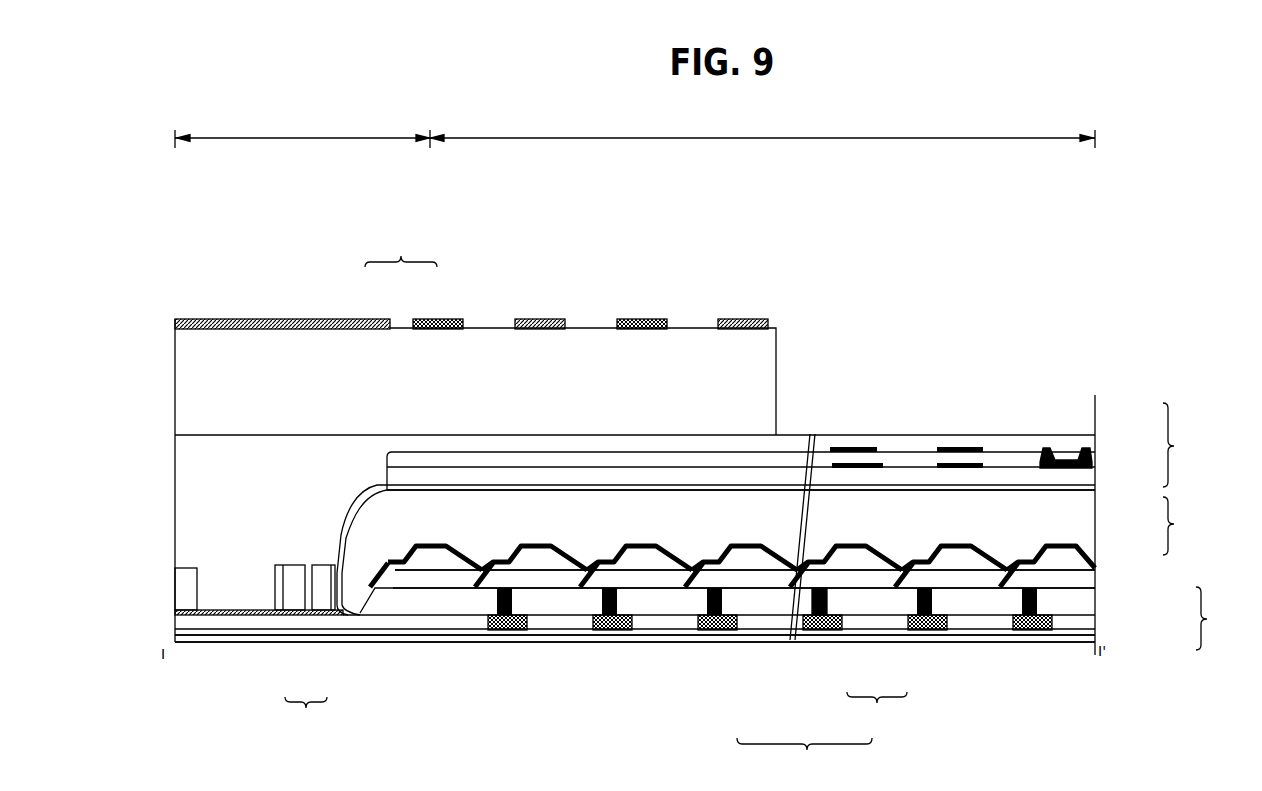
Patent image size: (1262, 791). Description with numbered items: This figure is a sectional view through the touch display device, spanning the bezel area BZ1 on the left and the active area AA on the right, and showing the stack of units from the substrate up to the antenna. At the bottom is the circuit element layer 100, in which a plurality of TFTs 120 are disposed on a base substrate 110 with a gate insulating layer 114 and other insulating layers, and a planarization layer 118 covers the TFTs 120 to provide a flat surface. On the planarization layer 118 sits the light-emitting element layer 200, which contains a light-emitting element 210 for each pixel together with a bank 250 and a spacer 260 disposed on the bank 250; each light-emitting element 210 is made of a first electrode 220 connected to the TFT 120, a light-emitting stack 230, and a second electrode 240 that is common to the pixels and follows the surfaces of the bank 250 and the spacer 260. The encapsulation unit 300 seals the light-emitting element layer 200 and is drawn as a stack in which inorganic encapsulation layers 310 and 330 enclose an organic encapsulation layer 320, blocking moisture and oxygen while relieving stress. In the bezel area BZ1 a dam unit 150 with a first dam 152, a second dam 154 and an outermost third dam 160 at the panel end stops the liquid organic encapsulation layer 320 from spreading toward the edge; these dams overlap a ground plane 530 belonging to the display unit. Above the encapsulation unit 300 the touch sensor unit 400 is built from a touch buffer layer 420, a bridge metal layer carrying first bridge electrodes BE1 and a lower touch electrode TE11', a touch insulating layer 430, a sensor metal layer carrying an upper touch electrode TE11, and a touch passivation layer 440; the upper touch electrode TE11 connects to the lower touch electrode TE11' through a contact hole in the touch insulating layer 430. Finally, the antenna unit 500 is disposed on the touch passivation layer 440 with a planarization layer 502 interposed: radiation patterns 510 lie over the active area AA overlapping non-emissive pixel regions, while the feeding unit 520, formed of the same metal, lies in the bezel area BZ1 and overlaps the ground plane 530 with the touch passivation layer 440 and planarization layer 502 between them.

The circuit element layer 100 is at (708, 525).
The base substrate 110 is at (1097, 638).
The gate insulating layer 114 is at (1097, 620).
The planarization layer 118 is at (1097, 593).
The TFT 120 is at (1036, 632).
The dam unit 150 is at (307, 653).
The first dam 152 is at (327, 611).
The second dam 154 is at (292, 611).
The third dam 160 is at (185, 643).
The light-emitting element layer 200 is at (732, 605).
The light-emitting element 210 is at (732, 637).
The first electrode 220 is at (901, 590).
The light-emitting stack 230 is at (889, 587).
The second electrode 240 is at (867, 585).
The bank 250 is at (767, 580).
The light emitting layer / second electrode 260 is at (742, 568).
The encapsulation unit 300 is at (784, 551).
The inorganic encapsulation layer 310 is at (1097, 569).
The organic encapsulation layer 320 is at (1097, 526).
The inorganic encapsulation layer 330 is at (1097, 492).
The touch sensor unit 400 is at (772, 505).
The touch buffer layer 420 is at (1097, 488).
The touch insulating layer 430 is at (1097, 468).
The touch passivation layer 440 is at (1097, 452).
The upper touch electrode TE11 is at (986, 422).
The lower touch electrode TE11' is at (921, 433).
The first bridge electrode BE1 is at (1080, 450).
The antenna unit 500 is at (471, 278).
The planarization layer 502 is at (770, 354).
The radiation pattern 510 is at (433, 316).
The feeding unit 520 is at (365, 316).
The ground plane 530 is at (238, 616).
The bezel area BZ1 is at (302, 131).
The active area AA is at (762, 131).